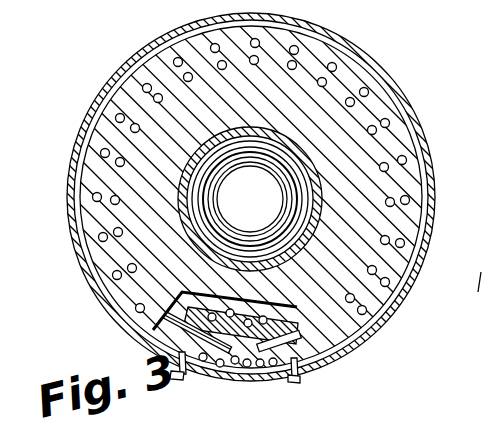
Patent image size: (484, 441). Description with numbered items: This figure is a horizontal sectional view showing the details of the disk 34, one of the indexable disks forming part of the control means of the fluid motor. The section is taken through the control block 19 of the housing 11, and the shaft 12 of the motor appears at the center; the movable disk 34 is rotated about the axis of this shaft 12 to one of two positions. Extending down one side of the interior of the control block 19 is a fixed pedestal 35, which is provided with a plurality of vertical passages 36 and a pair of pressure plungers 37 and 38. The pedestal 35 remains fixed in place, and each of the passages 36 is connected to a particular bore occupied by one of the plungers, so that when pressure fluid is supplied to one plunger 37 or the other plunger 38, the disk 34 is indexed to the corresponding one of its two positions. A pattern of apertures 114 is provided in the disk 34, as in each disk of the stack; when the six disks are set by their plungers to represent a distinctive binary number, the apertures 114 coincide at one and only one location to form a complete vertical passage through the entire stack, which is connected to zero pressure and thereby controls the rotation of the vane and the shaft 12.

The housing 11 is at (358, 57).
The shaft 12 is at (254, 199).
The control block 19 is at (411, 101).
The disk 34 is at (158, 68).
The fixed pedestal 35 is at (236, 372).
The vertical passages 36 is at (272, 362).
The pressure plunger 37 is at (150, 366).
The pressure plunger 38 is at (324, 353).
The apertures 114 is at (115, 163).